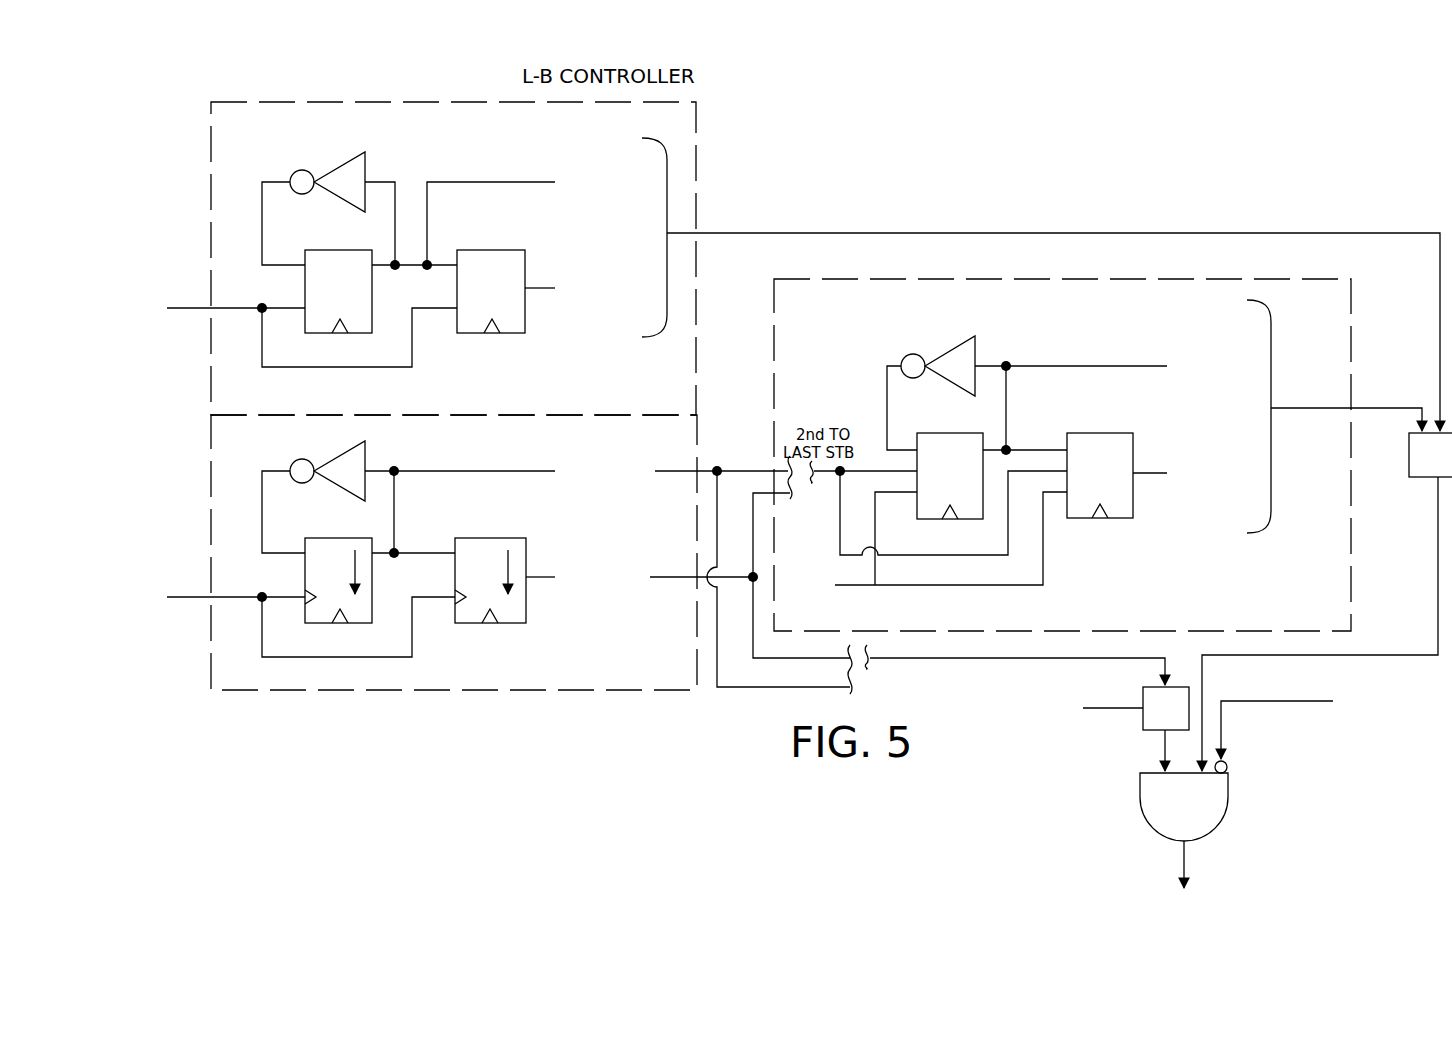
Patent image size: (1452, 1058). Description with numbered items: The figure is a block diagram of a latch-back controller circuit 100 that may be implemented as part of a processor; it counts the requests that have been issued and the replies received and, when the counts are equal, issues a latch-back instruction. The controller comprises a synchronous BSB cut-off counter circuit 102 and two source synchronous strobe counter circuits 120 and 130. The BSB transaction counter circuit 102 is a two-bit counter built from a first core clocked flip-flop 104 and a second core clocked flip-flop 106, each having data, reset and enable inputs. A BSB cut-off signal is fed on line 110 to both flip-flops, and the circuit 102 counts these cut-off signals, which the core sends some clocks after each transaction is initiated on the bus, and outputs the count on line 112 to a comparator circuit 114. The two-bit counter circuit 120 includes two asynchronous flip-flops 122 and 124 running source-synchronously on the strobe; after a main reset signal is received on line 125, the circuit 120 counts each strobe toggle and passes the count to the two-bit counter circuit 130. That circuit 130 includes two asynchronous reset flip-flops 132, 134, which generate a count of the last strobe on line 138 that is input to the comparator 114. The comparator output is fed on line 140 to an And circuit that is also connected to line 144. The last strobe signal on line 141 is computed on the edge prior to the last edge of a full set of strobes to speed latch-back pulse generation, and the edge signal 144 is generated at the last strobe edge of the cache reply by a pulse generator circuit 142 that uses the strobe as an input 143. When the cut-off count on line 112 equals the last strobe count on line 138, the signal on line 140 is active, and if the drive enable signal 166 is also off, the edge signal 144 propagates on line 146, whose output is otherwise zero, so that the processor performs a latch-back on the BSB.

The latch-back controller circuit 100 is at (1170, 185).
The BSB cut-off counter circuit 102 is at (453, 258).
The first core clocked flip-flop 104 is at (337, 290).
The second core clocked flip-flop 106 is at (489, 250).
The line 110 is at (190, 308).
The line 112 is at (870, 233).
The comparator circuit 114 is at (1430, 455).
The two-bit counter circuit 120 is at (499, 552).
The asynchronous flip-flop 122 is at (337, 538).
The asynchronous flip-flop 124 is at (487, 538).
The line 125 is at (195, 597).
The two-bit counter circuit 130 is at (1062, 455).
The asynchronous reset flip-flop 132 is at (948, 473).
The asynchronous reset flip-flop 134 is at (1110, 433).
The line 138 is at (1295, 408).
The line 140 is at (1438, 508).
The line 141 is at (987, 660).
The pulse generator circuit 142 is at (1166, 708).
The input 143 is at (1103, 708).
The edge signal 144 is at (1160, 748).
The line 146 is at (1186, 869).
The drive enable signal 166 is at (1265, 701).